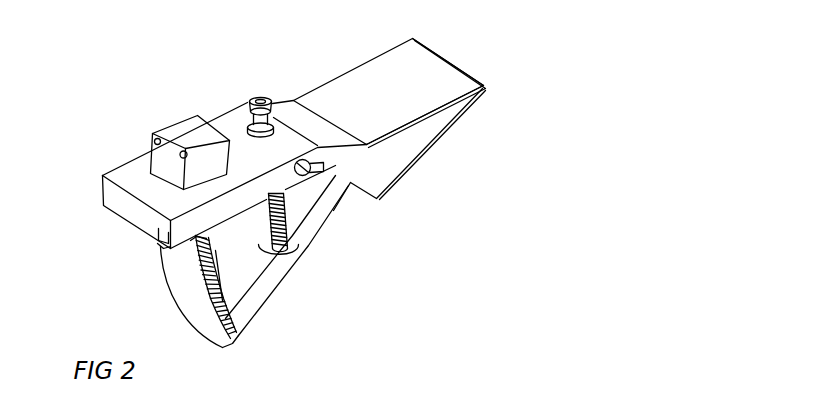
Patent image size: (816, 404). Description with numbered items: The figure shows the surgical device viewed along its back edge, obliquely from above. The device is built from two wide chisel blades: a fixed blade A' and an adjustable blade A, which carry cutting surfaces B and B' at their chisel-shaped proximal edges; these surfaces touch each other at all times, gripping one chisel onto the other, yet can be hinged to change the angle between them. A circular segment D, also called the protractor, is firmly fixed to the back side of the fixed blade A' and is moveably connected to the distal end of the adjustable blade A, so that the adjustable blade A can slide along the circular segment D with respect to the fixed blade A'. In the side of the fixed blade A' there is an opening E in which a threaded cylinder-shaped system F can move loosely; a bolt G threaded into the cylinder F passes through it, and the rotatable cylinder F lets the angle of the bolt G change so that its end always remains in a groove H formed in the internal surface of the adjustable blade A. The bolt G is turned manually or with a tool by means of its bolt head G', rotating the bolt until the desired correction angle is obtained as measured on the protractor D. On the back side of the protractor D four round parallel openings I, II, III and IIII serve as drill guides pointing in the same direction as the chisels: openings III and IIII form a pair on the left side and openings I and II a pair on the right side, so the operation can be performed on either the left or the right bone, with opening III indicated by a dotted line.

The parallel opening I is at (183, 153).
The parallel opening II is at (190, 248).
The parallel opening III is at (157, 140).
The parallel opening IIII is at (150, 238).
The fixed blade A' is at (453, 93).
The cutting surface B is at (546, 62).
The cutting surface B' is at (532, 105).
The bolt head G' is at (435, 117).
The adjustable blade A is at (501, 144).
The opening E is at (323, 163).
The threaded cylinder-shaped system F is at (330, 172).
The bolt G is at (469, 218).
The groove H is at (290, 237).
The circular segment D is at (220, 282).